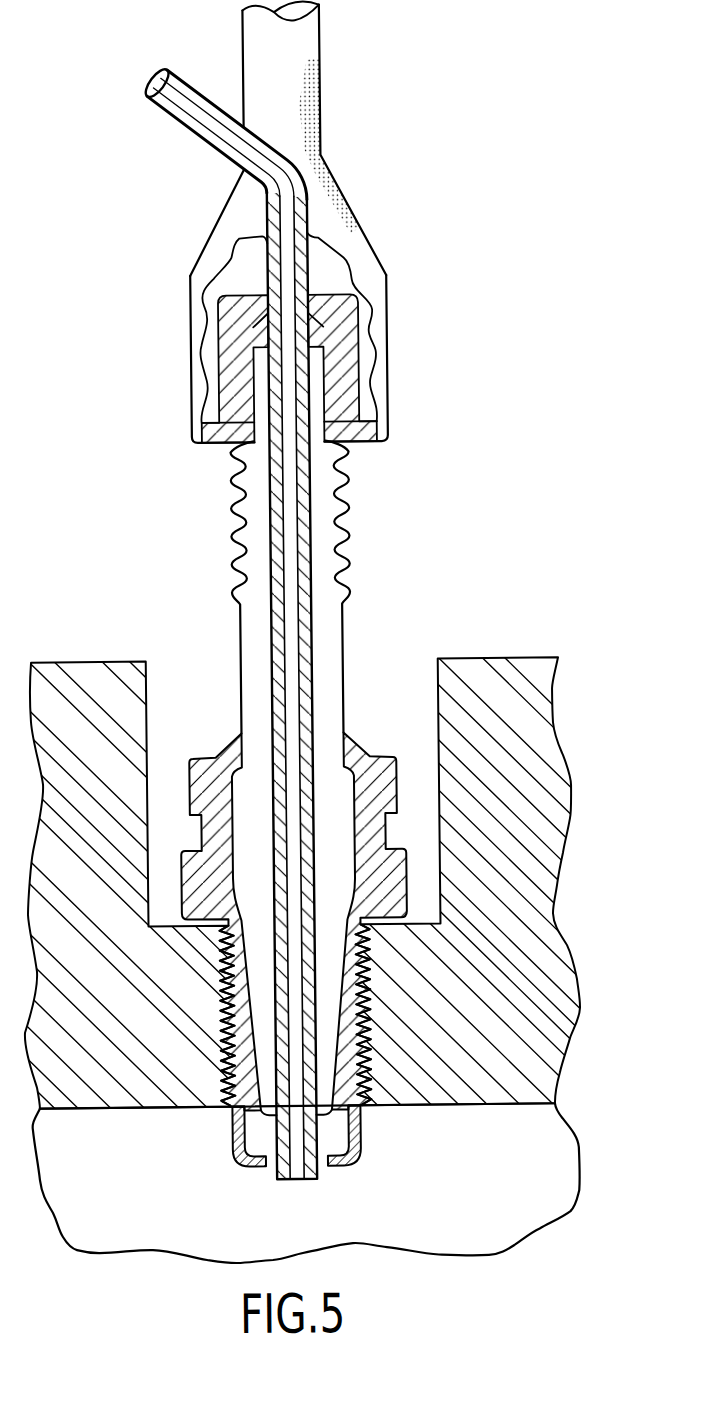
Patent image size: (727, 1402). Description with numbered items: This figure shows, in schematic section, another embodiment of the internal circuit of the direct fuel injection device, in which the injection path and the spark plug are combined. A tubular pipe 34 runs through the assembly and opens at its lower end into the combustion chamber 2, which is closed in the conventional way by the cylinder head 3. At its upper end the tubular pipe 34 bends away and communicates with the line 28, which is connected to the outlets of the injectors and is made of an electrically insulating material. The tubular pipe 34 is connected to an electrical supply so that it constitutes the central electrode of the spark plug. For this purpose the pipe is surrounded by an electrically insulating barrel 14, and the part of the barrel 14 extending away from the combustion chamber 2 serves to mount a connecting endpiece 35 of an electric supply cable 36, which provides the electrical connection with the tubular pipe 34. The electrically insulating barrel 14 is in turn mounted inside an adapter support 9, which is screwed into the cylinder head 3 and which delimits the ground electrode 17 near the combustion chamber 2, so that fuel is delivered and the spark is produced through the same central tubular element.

The combustion chamber 2 is at (542, 1170).
The cylinder head 3 is at (547, 981).
The adapter support 9 is at (395, 886).
The electrically insulating barrel 14 is at (339, 538).
The ground electrode 17 is at (245, 1163).
The line 28 is at (200, 116).
The tubular pipe 34 is at (276, 627).
The connecting endpiece 35 is at (388, 351).
The electric supply cable 36 is at (252, 50).